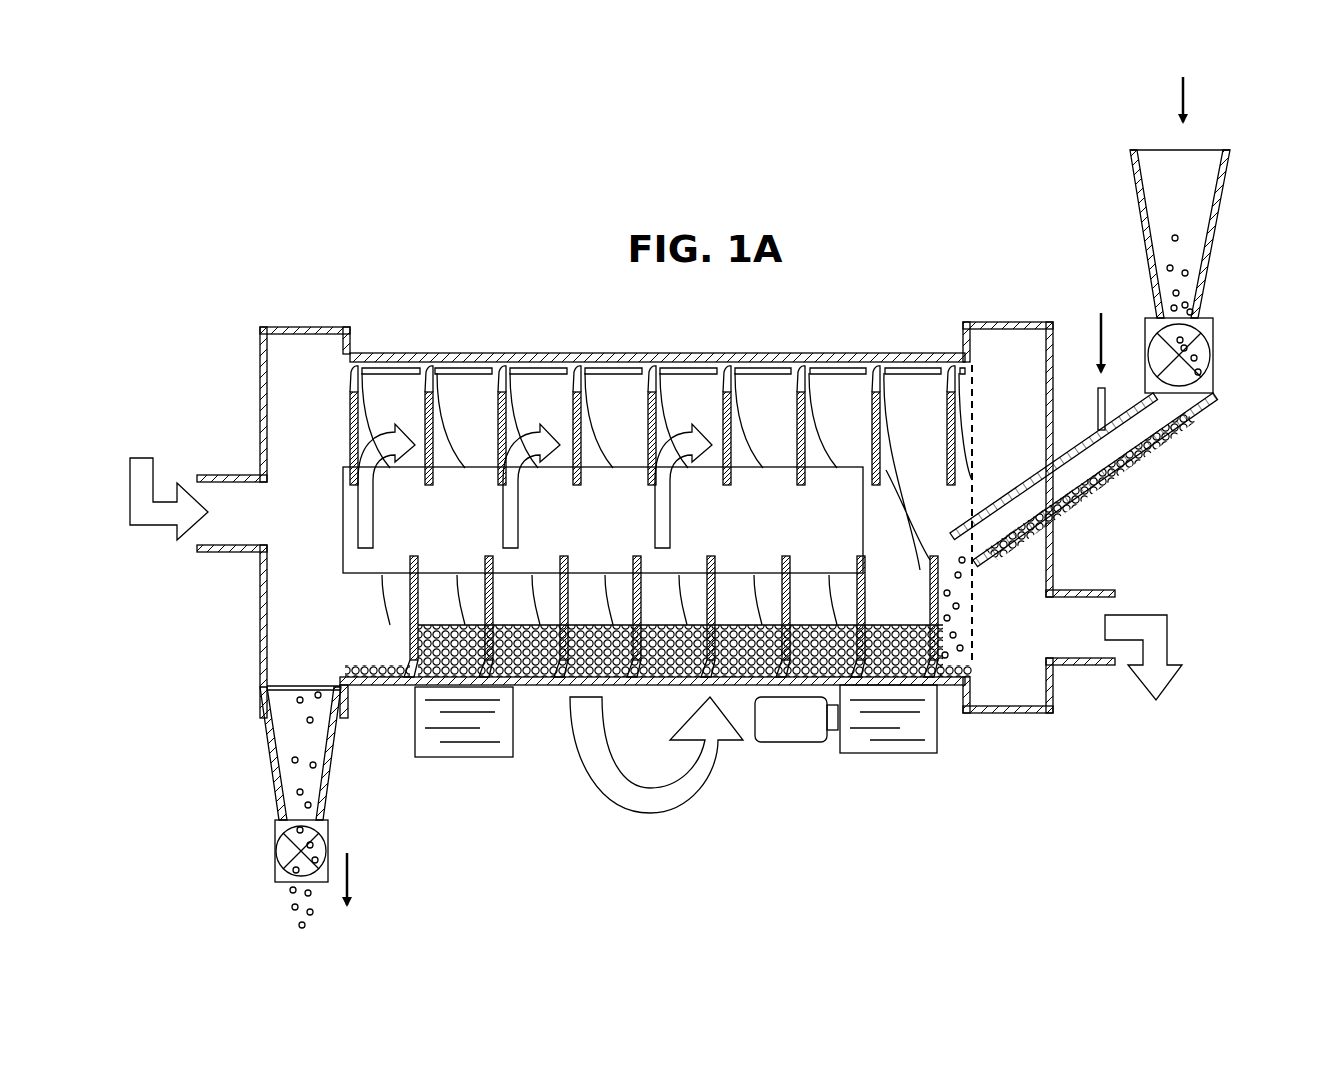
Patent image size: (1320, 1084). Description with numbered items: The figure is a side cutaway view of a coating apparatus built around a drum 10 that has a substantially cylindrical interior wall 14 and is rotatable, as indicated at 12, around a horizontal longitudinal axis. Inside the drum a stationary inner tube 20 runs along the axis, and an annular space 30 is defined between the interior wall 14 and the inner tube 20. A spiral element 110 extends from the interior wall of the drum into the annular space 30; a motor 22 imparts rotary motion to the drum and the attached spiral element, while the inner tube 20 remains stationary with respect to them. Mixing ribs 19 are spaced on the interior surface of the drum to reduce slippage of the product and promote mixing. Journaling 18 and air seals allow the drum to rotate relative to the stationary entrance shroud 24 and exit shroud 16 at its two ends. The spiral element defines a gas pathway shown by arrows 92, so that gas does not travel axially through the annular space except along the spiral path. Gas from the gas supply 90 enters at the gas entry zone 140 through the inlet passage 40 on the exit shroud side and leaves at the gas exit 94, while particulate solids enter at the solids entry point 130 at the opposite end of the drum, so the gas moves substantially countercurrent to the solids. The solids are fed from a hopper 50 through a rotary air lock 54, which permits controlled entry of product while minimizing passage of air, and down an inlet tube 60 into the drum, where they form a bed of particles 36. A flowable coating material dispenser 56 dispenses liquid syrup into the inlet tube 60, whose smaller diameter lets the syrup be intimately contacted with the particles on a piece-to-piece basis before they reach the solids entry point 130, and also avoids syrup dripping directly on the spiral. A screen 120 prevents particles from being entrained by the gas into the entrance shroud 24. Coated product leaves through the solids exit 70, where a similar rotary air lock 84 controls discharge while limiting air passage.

The drum 10 is at (790, 352).
The rotation direction 12 is at (689, 757).
The interior wall 14 is at (478, 368).
The exit shroud 16 is at (286, 373).
The journaling 18 is at (352, 352).
The mixing ribs 19 is at (412, 368).
The inner tube 20 is at (586, 530).
The motor 22 is at (776, 733).
The entrance shroud 24 is at (998, 370).
The annular space 30 is at (620, 380).
The bed of particles 36 is at (650, 625).
The gas inlet pipe 40 is at (258, 590).
The hopper 50 is at (1135, 230).
The rotary air lock 54 is at (1215, 350).
The flowable coating material dispenser 56 is at (1095, 404).
The inlet tube 60 is at (1155, 438).
The solids exit 70 is at (268, 738).
The rotary air lock 84 is at (328, 840).
The gas supply 90 is at (153, 472).
The gas pathway arrows 92 is at (356, 530).
The gas exit 94 is at (1172, 626).
The spiral element 110 is at (509, 372).
The screen 120 is at (975, 620).
The solids entry point 130 is at (958, 625).
The gas entry zone 140 is at (303, 284).